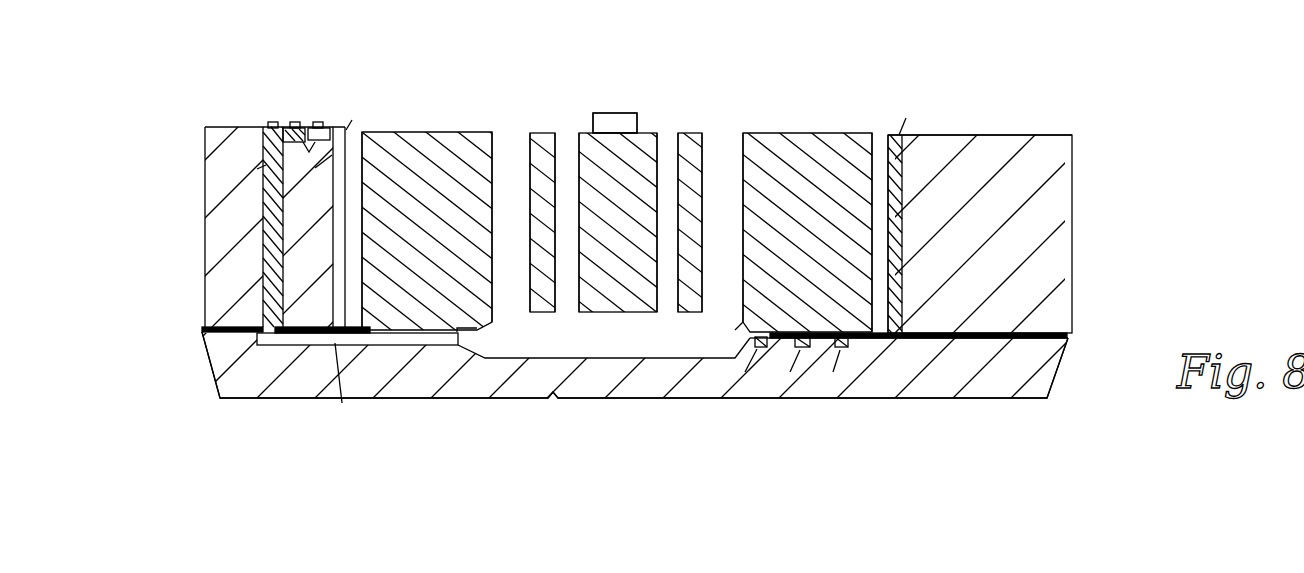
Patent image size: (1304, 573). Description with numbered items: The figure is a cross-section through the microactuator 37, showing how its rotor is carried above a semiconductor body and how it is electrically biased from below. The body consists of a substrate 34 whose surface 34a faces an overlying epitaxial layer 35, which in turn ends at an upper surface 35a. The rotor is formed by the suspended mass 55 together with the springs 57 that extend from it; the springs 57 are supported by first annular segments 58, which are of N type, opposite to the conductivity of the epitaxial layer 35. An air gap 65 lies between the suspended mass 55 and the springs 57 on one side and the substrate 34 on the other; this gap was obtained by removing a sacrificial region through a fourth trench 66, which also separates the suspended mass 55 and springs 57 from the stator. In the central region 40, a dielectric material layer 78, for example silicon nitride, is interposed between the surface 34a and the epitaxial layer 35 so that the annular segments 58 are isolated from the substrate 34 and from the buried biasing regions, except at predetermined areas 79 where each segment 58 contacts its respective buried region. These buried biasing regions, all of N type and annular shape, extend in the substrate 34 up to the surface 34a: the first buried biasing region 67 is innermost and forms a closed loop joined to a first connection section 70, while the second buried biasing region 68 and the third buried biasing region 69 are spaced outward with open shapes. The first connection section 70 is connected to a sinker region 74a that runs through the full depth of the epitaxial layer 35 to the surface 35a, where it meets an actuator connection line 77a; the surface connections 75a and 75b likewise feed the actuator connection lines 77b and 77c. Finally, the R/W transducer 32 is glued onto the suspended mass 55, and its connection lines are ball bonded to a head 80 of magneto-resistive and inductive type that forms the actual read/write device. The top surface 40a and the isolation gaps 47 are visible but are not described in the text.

The R/W transducer 32 is at (612, 118).
The substrate 34 is at (1045, 378).
The surface of the substrate 34a is at (1052, 332).
The epitaxial layer 35 is at (1055, 263).
The surface of the epitaxial layer 35a is at (956, 128).
The microactuator 37 is at (688, 115).
The central region 40 is at (1112, 234).
The device top surface 40a is at (222, 226).
The isolation trench 47 is at (357, 149).
The suspended mass 55 is at (636, 275).
The springs 57 is at (540, 133).
The first annular segments 58 is at (438, 134).
The air gap 65 is at (640, 352).
The fourth trench 66 is at (514, 150).
The first buried biasing region 67 is at (762, 348).
The second buried biasing region 68 is at (801, 348).
The third buried biasing region 69 is at (840, 348).
The first connection section 70 is at (363, 343).
The sinker region 74a is at (263, 163).
The surface connection 75a is at (291, 122).
The surface connection 75b is at (325, 130).
The actuator connection line 77a is at (272, 122).
The actuator connection line 77b is at (309, 150).
The actuator connection line 77c is at (318, 122).
The dielectric material layer 78 is at (206, 330).
The predetermined areas 79 is at (448, 326).
The head 80 is at (642, 128).